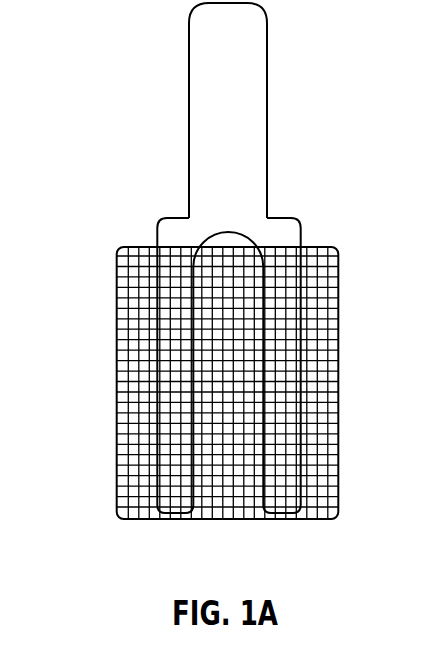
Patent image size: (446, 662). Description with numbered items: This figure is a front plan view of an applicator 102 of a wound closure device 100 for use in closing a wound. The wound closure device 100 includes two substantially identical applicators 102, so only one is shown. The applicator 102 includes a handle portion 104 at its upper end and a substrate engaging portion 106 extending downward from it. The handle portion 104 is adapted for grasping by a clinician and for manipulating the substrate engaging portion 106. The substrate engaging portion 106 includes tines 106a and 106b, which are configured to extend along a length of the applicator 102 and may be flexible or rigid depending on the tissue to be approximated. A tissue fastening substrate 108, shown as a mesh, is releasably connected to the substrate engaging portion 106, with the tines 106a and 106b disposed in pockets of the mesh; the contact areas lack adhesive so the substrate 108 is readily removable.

The wound closure device 100 is at (323, 162).
The applicator 102 is at (167, 63).
The handle portion 104 is at (188, 126).
The substrate engaging portion 106 is at (158, 225).
The tine 106a is at (175, 516).
The tine 106b is at (280, 517).
The tissue fastening substrate 108 is at (102, 327).